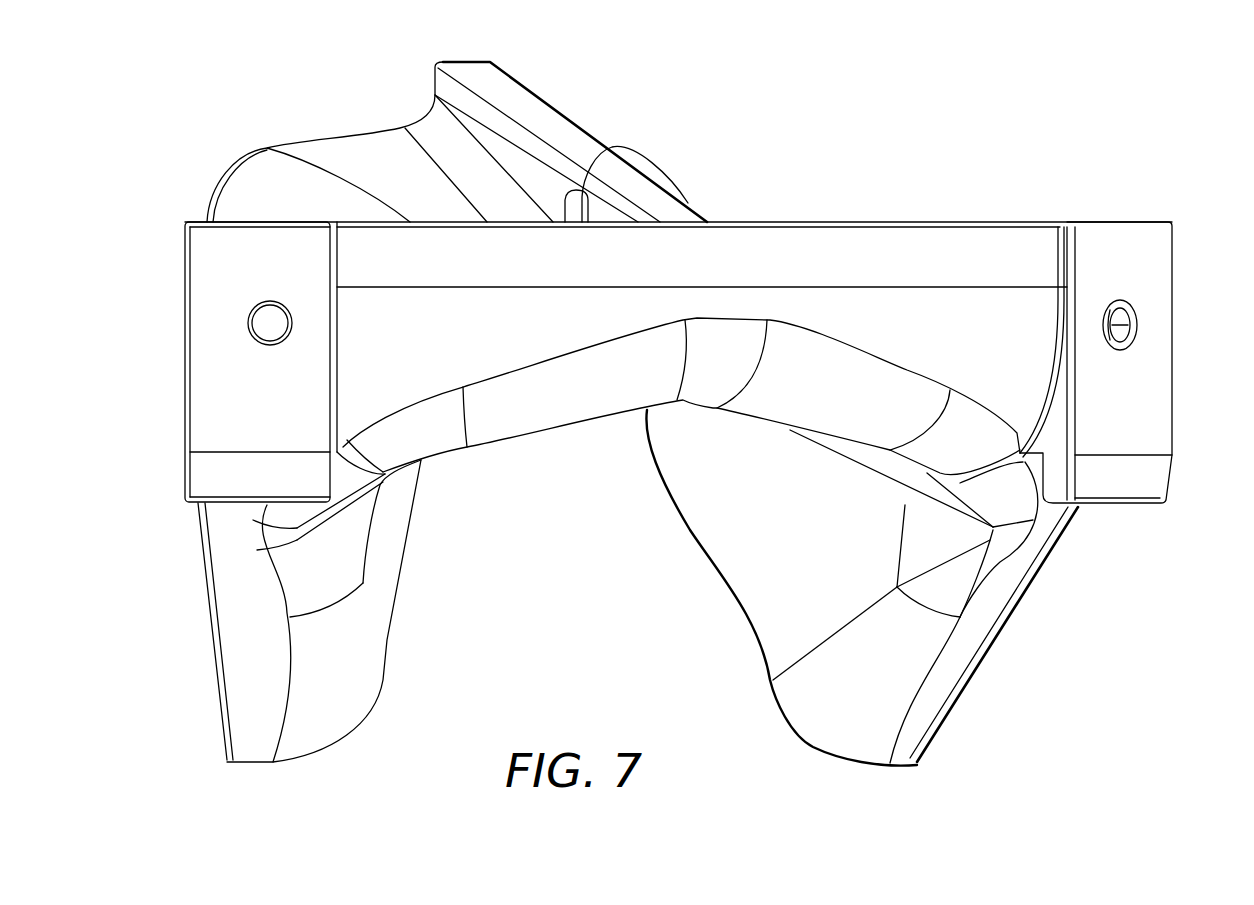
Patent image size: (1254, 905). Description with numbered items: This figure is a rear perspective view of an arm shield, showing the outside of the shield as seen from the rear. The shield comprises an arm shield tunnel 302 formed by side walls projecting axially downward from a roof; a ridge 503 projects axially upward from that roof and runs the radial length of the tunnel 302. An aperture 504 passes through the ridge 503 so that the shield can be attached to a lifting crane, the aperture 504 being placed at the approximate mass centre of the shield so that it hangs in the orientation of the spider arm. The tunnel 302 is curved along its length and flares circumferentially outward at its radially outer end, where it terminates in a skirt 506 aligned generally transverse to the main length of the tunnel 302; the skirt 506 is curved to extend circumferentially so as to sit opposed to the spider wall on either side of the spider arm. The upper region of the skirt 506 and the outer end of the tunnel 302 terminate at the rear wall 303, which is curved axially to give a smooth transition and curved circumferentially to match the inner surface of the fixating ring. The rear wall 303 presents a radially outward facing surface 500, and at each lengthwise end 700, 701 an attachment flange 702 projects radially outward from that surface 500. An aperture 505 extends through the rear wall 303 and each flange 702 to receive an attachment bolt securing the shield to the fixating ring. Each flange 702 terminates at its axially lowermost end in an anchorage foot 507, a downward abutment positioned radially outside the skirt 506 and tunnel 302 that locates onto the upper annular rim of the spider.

The arm shield tunnel 302 is at (360, 143).
The rear wall 303 is at (843, 222).
The radially outward facing surface 500 is at (978, 312).
The ridge 503 is at (532, 107).
The aperture 504 is at (623, 158).
The aperture 505 is at (1125, 335).
The skirt 506 is at (210, 605).
The anchorage foot 507 is at (1130, 492).
The lengthwise end 700 is at (185, 275).
The lengthwise end 701 is at (1172, 270).
The attachment flange 702 is at (313, 350).